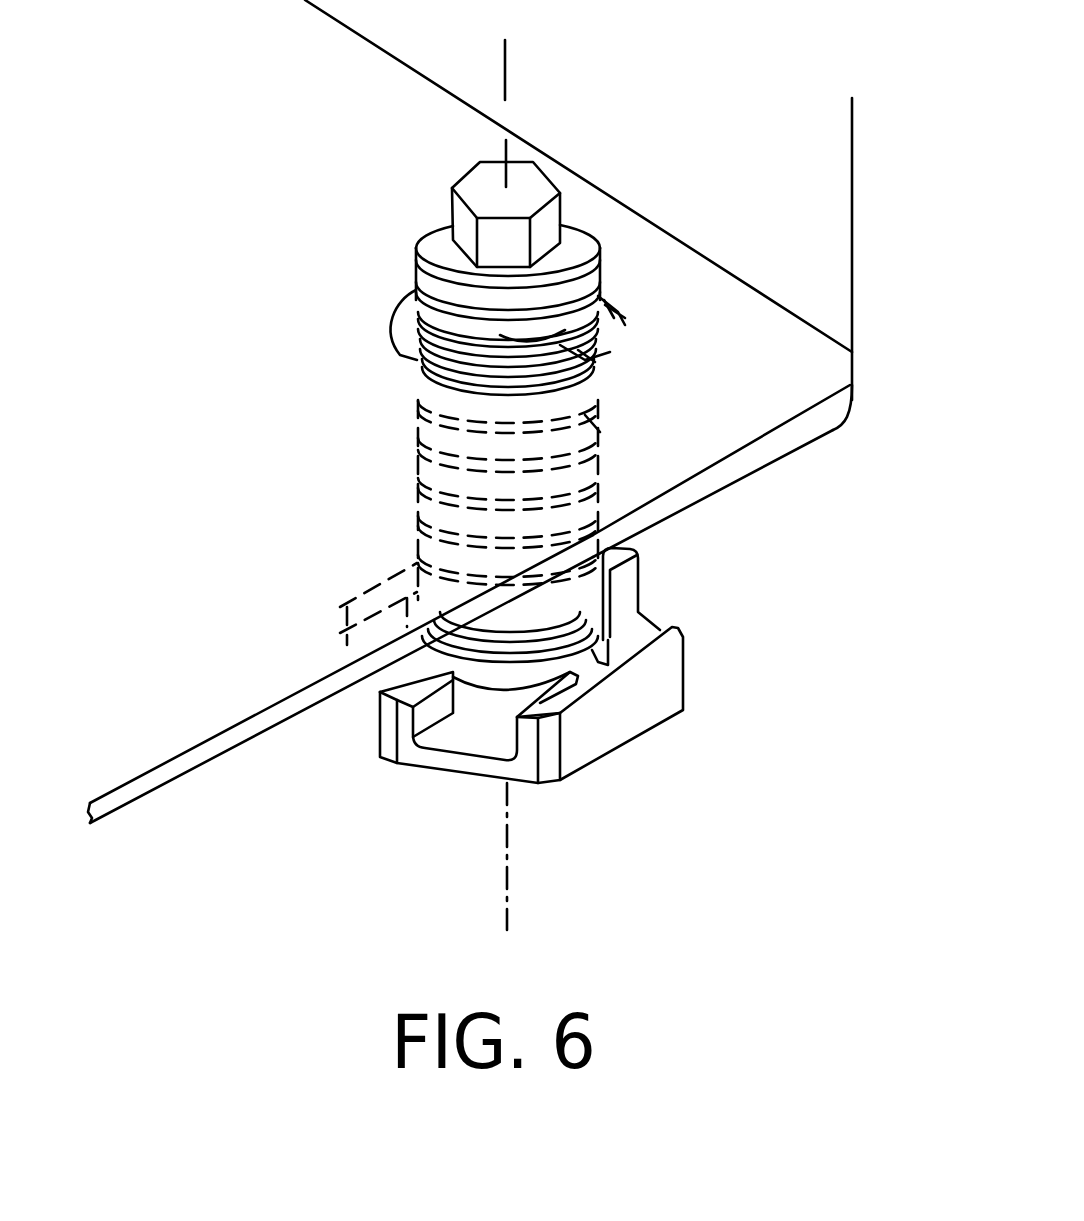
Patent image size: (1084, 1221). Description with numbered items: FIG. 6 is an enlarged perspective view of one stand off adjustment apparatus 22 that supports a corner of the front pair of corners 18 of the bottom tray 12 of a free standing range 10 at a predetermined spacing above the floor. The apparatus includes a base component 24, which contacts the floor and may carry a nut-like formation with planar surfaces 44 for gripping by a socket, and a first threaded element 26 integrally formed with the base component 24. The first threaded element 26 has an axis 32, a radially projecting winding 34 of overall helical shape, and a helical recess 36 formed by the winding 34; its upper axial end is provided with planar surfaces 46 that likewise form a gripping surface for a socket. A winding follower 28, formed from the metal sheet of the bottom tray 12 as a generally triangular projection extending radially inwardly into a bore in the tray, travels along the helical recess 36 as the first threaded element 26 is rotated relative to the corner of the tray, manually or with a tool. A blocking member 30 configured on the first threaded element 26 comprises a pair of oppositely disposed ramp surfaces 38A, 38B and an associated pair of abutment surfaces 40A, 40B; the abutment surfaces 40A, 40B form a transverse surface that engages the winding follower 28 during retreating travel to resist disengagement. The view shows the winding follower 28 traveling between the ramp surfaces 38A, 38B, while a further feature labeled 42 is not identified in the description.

The free standing range 10 is at (781, 120).
The bottom tray 12 is at (218, 718).
The front pair of corners 18 is at (848, 367).
The stand off adjustment apparatus 22 is at (511, 307).
The base component 24 is at (563, 712).
The first threaded element 26 is at (640, 597).
The winding follower 28 is at (619, 309).
The blocking member 30 is at (581, 354).
The axis 32 is at (508, 62).
The radially projecting winding 34 is at (470, 384).
The helical recess 36 is at (470, 355).
The ramp surface 38A is at (593, 380).
The ramp surface 38B is at (616, 325).
The abutment surface 40A is at (593, 430).
The abutment surface 40B is at (557, 340).
The gap 42 is at (613, 317).
The planar surfaces 44 is at (617, 727).
The planar surfaces 46 is at (452, 210).